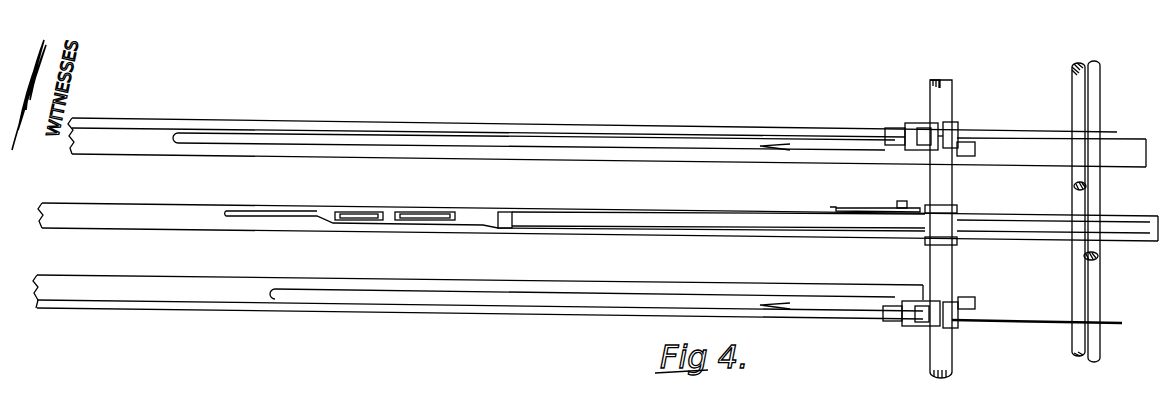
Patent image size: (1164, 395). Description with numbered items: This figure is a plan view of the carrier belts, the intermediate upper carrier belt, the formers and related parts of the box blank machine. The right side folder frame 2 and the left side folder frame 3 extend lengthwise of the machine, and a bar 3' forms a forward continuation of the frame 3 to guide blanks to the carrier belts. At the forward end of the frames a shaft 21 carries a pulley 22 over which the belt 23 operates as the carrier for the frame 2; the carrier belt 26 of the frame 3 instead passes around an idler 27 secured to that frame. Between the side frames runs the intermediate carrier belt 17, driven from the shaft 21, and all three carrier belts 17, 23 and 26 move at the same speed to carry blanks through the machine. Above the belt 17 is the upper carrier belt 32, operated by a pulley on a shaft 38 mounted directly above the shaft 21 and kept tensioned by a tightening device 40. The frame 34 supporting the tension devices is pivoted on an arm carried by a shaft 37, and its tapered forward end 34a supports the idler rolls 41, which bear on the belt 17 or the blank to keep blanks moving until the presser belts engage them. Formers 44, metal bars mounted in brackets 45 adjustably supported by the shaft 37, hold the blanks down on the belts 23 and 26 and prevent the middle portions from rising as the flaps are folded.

The right side folder frame 2 is at (190, 102).
The left side folder frame 3 is at (478, 313).
The bar 3' is at (1037, 341).
The intermediate carrier belt 17 is at (128, 222).
The shaft 21 is at (1070, 78).
The pulley 22 is at (1060, 165).
The belt 23 is at (150, 155).
The carrier belt 26 is at (165, 293).
The idler 27 is at (925, 296).
The upper carrier belt 32 is at (571, 222).
The frame 34 is at (497, 228).
The forward end of the frame 34a is at (243, 213).
The shaft 37 is at (930, 106).
The shaft 38 is at (1098, 254).
The tightening device 40 is at (838, 210).
The idler rolls 41 is at (372, 221).
The formers 44 is at (288, 142).
The brackets 45 is at (912, 125).